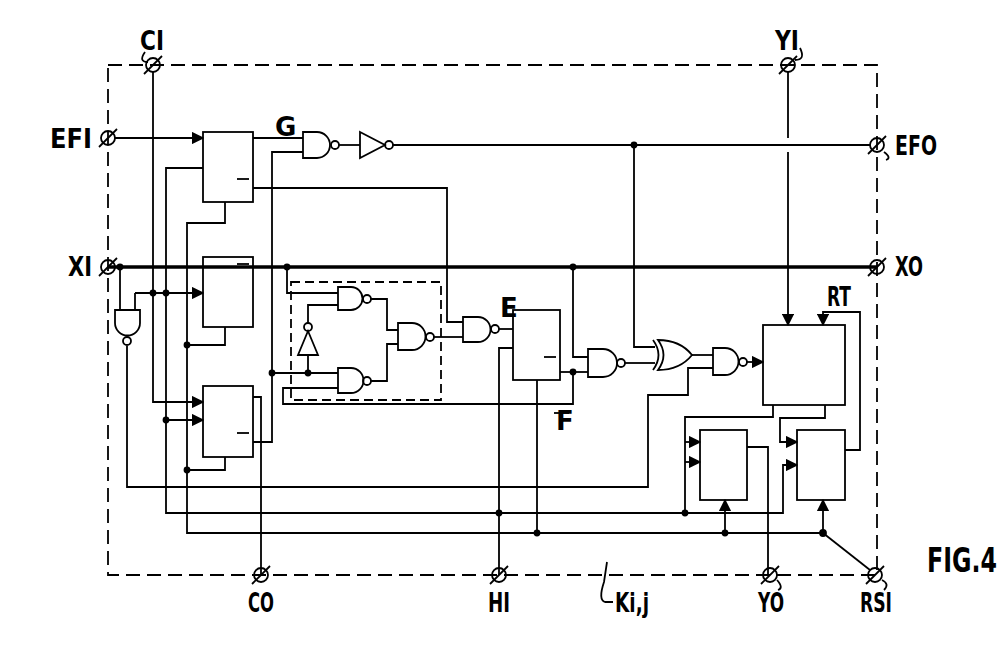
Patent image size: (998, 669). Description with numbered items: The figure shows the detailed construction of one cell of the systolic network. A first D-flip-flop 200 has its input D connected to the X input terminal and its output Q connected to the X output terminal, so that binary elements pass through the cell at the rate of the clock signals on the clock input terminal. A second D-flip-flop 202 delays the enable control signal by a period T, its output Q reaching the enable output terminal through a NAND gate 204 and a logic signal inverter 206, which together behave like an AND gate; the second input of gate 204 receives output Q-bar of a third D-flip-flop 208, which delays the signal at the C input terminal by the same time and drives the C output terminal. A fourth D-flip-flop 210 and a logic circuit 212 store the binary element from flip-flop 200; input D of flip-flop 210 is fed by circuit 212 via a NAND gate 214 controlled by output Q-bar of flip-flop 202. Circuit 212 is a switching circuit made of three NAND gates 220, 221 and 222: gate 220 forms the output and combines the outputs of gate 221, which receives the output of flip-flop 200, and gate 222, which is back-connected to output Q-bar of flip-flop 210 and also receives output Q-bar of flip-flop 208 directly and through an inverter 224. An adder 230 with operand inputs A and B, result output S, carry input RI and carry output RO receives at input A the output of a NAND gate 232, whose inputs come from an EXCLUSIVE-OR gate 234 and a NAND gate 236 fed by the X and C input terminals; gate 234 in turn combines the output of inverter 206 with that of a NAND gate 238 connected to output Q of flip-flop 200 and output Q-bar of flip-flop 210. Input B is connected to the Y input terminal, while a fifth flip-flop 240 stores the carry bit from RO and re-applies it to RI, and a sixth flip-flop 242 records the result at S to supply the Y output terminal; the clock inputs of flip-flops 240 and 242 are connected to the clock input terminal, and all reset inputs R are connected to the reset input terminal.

The first type D-flip-flop 200 is at (225, 257).
The second type D-flip-flop 202 is at (226, 132).
The NAND gate 204 is at (313, 132).
The logic signal inverter 206 is at (378, 155).
The third type D-flip-flop 208 is at (225, 386).
The fourth type D-flip-flop 210 is at (558, 292).
The logic circuit 212 is at (441, 376).
The NAND gate 214 is at (492, 292).
The NAND gate 220 is at (422, 318).
The NAND gate 221 is at (360, 313).
The NAND gate 222 is at (372, 390).
The inverter 224 is at (322, 348).
The adder 230 is at (780, 325).
The NAND gate 232 is at (732, 322).
The EXCLUSIVE-OR gate 234 is at (680, 340).
The NAND gate 236 is at (115, 327).
The NAND gate 238 is at (603, 376).
The fifth flip-flop 240 is at (838, 490).
The sixth D-type flip-flop 242 is at (692, 443).